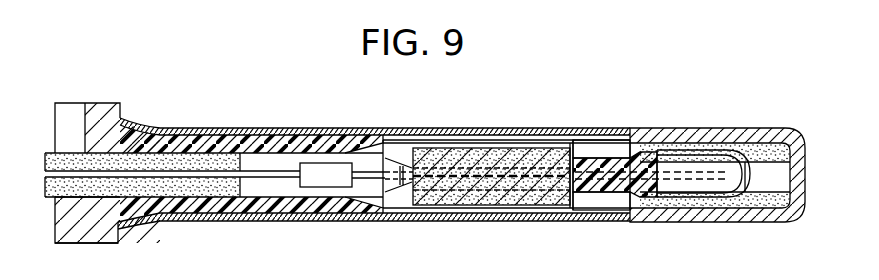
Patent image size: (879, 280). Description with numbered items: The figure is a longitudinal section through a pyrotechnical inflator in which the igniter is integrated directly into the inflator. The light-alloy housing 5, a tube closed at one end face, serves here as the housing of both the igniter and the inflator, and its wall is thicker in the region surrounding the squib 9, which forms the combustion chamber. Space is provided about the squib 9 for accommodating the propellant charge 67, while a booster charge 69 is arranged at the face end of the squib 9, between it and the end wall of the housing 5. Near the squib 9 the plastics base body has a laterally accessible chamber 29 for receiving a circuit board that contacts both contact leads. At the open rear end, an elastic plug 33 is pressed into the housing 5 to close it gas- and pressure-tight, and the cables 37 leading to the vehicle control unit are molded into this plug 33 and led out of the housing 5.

The housing 5 is at (548, 127).
The squib 9 is at (720, 195).
The chamber 29 is at (602, 206).
The elastic plug 33 is at (172, 204).
The cables 37 is at (255, 172).
The propellant charge 67 is at (758, 145).
The booster charge 69 is at (775, 172).